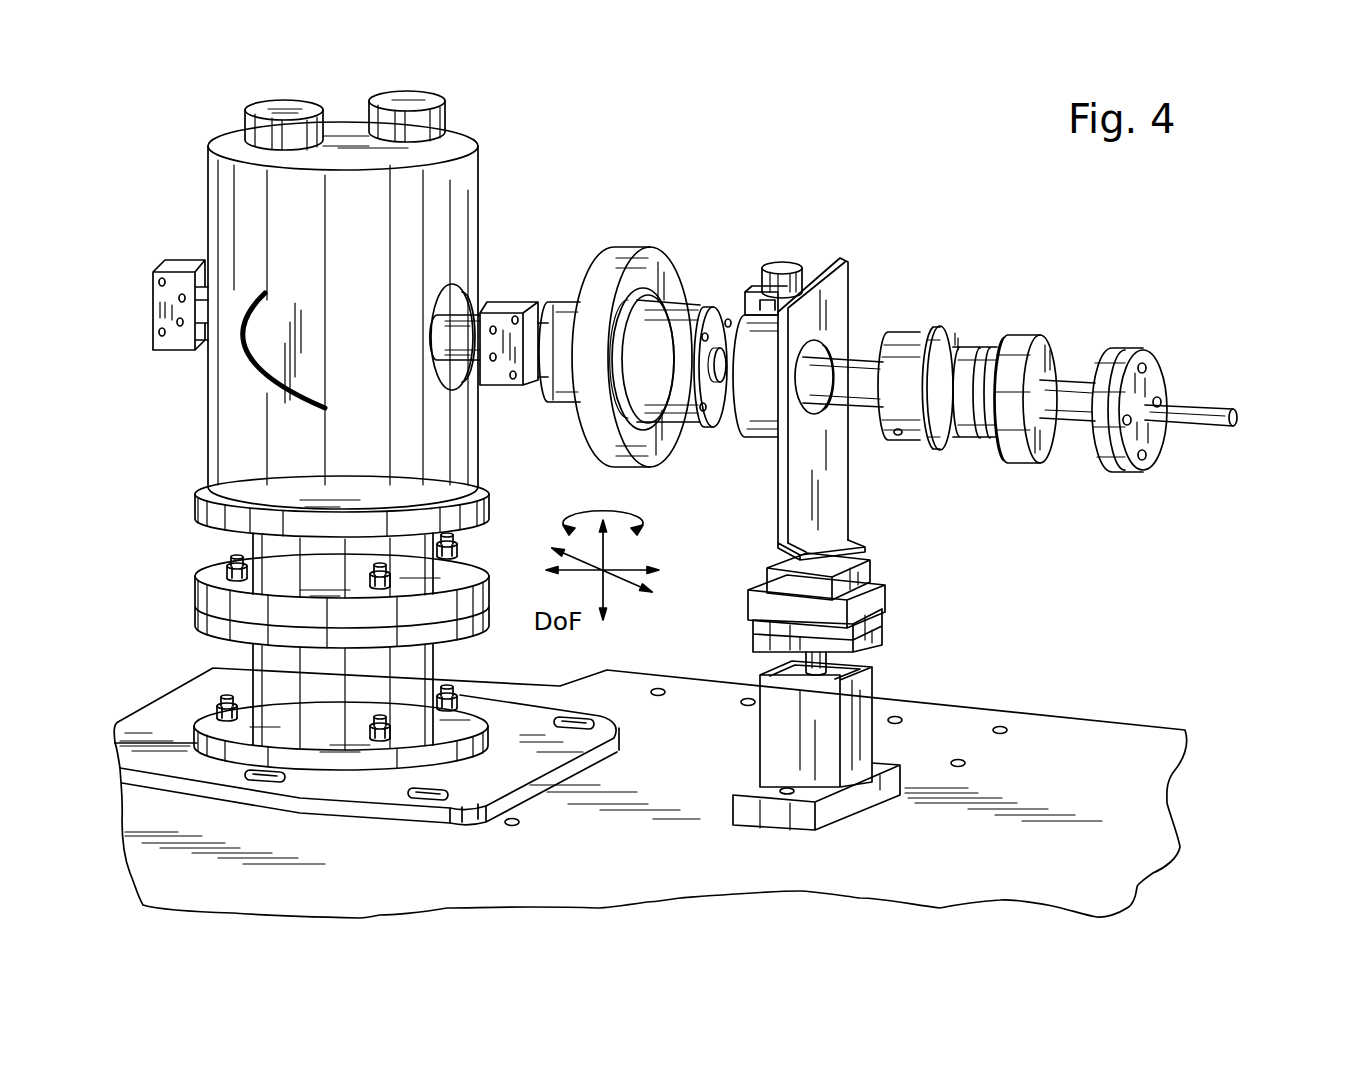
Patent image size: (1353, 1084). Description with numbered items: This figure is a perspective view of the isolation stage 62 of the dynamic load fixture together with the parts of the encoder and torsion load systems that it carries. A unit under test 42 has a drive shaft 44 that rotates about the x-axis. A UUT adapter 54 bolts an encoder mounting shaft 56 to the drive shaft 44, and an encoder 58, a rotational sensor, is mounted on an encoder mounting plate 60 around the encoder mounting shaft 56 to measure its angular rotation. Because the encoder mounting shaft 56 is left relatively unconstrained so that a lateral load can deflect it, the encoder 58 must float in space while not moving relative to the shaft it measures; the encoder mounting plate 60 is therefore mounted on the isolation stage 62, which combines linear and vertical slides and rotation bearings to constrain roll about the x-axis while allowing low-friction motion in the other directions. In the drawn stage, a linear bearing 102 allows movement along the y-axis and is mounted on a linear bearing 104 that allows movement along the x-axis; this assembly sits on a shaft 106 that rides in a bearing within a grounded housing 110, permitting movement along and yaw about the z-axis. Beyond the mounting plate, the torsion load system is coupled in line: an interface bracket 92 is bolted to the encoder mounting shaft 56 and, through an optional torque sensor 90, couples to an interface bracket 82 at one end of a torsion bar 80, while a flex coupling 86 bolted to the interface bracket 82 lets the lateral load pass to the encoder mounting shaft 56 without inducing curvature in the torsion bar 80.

The unit under test 42 is at (367, 264).
The drive shaft 44 is at (458, 338).
The UUT adapter 54 is at (497, 377).
The encoder mounting shaft 56 is at (573, 290).
The encoder 58 is at (781, 246).
The encoder mounting plate 60 is at (848, 249).
The isolation stage 62 is at (1132, 572).
The torsion bar 80 is at (1220, 407).
The interface bracket 82 is at (1165, 367).
The flex coupling 86 is at (984, 326).
The torque sensor 90 is at (1079, 331).
The interface bracket 92 is at (919, 306).
The linear bearing 102 is at (872, 568).
The linear bearing 104 is at (880, 617).
The shaft 106 is at (857, 662).
The grounded housing 110 is at (870, 727).